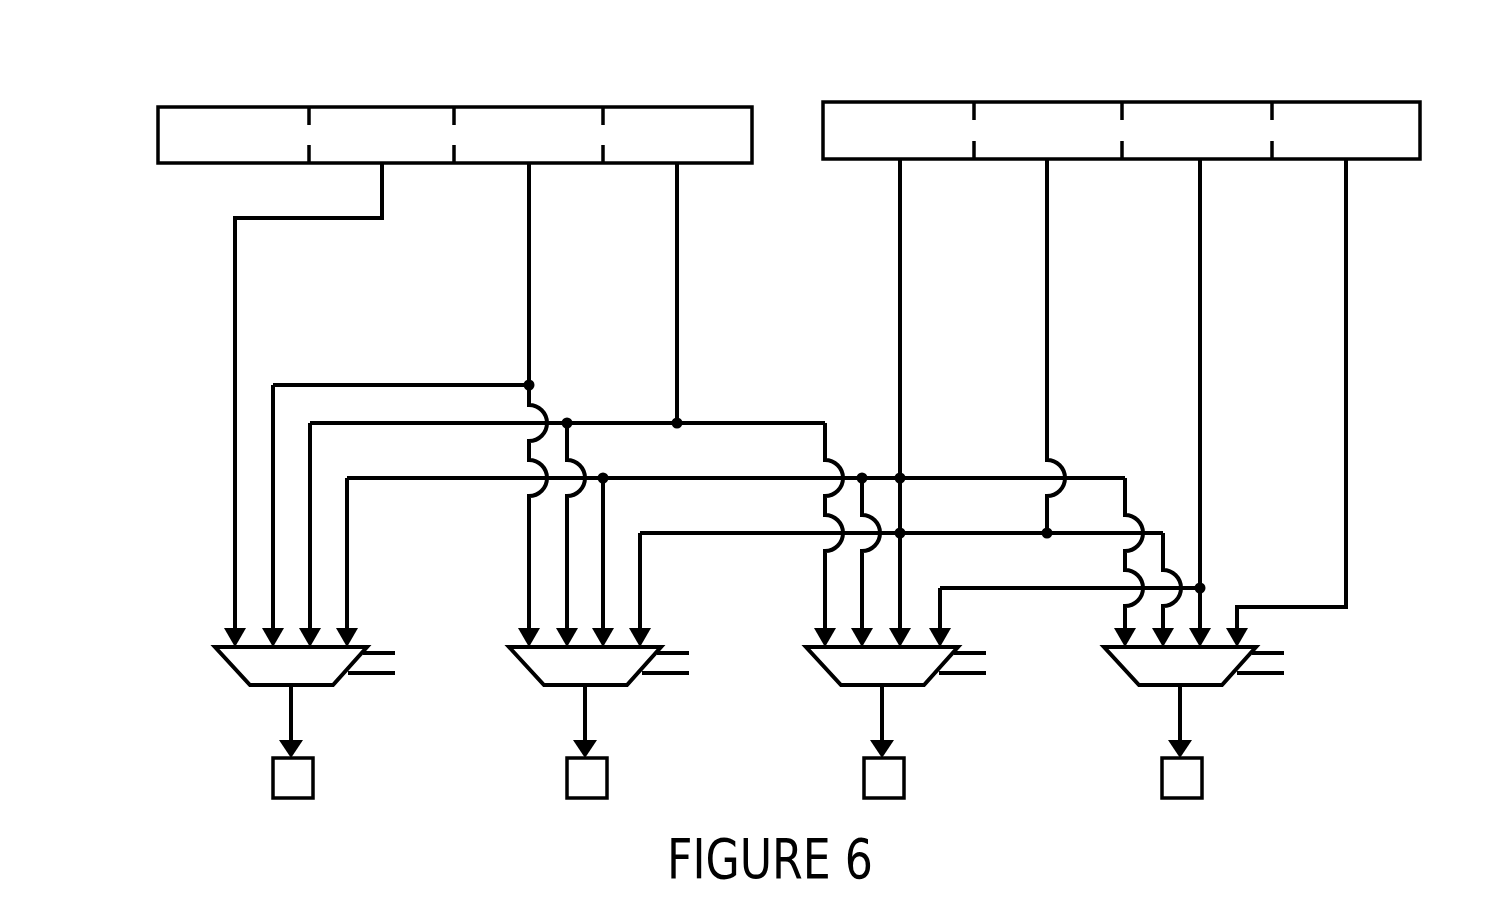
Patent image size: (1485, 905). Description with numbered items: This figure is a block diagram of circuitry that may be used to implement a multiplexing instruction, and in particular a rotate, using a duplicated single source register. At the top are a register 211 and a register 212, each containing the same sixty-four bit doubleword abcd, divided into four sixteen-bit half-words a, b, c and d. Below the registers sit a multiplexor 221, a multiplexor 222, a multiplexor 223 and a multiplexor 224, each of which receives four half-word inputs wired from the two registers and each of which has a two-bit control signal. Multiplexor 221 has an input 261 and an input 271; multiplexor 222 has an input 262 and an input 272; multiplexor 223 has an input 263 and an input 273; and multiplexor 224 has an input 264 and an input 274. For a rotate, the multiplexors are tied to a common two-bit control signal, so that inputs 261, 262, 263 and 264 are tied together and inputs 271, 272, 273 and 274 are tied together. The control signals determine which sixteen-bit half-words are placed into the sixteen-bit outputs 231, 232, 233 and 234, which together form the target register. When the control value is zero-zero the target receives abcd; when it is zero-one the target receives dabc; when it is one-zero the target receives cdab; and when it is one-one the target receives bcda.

The register 211 is at (752, 106).
The register 212 is at (1420, 102).
The multiplexor 221 is at (335, 685).
The multiplexor 222 is at (629, 685).
The multiplexor 223 is at (926, 685).
The multiplexor 224 is at (1224, 685).
The sixteen bit output 231 is at (313, 773).
The sixteen bit output 232 is at (607, 773).
The sixteen bit output 233 is at (904, 773).
The sixteen bit output 234 is at (1202, 773).
The input 261 is at (395, 653).
The input 262 is at (689, 653).
The input 263 is at (986, 653).
The input 264 is at (1284, 653).
The input 271 is at (383, 675).
The input 272 is at (677, 675).
The input 273 is at (974, 675).
The input 274 is at (1272, 675).